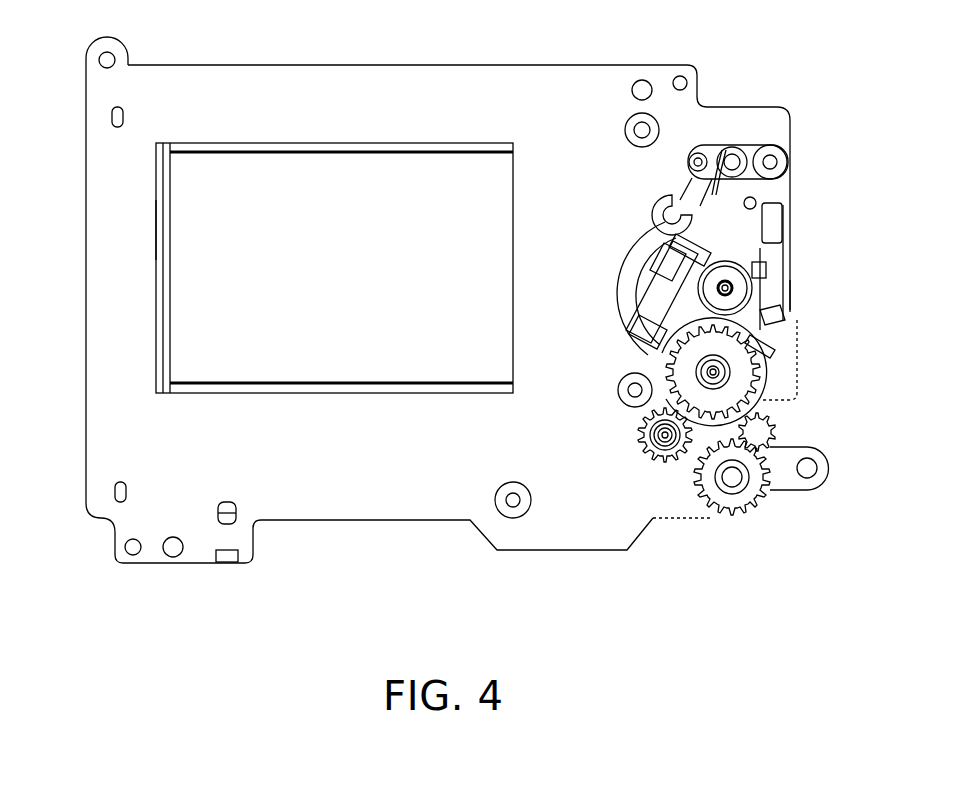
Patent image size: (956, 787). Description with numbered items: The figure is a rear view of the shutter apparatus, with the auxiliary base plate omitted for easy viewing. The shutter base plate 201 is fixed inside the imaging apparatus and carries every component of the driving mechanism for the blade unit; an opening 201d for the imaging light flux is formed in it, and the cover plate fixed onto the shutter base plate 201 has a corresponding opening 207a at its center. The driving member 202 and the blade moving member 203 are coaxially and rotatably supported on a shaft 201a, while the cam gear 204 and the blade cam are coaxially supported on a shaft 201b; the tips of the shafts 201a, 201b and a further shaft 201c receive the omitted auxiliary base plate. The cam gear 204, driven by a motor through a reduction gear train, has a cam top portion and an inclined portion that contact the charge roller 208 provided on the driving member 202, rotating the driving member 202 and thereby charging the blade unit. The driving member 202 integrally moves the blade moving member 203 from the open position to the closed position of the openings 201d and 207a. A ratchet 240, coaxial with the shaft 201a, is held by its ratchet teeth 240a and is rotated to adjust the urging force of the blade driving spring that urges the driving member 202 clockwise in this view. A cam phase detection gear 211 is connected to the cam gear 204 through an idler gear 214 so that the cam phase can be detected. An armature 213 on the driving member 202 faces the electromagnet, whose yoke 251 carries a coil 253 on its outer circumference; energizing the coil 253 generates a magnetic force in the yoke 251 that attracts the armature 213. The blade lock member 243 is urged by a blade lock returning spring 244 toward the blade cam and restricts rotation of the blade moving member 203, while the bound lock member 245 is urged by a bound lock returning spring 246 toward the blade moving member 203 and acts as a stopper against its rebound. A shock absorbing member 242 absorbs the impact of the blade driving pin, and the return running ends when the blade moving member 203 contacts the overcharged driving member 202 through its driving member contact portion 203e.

The shutter base plate 201 is at (163, 85).
The shaft 201a is at (792, 302).
The shaft 201b is at (700, 375).
The shaft 201c is at (650, 457).
The opening 201d is at (155, 228).
The driving member 202 is at (655, 238).
The blade moving member 203 is at (762, 258).
The driving member contact portion 203e is at (778, 203).
The cam gear 204 is at (640, 352).
The opening 207a is at (213, 158).
The charge roller 208 is at (772, 346).
The cam phase detection gear 211 is at (750, 497).
The armature 213 is at (645, 248).
The idler gear 214 is at (630, 445).
The ratchet 240 is at (755, 288).
The ratchet teeth 240a is at (776, 318).
The shock absorbing member 242 is at (663, 195).
The blade lock member 243 is at (770, 402).
The blade lock returning spring 244 is at (772, 450).
The bound lock member 245 is at (762, 270).
The bound lock returning spring 246 is at (713, 192).
The yoke 251 is at (622, 315).
The coil 253 is at (632, 276).